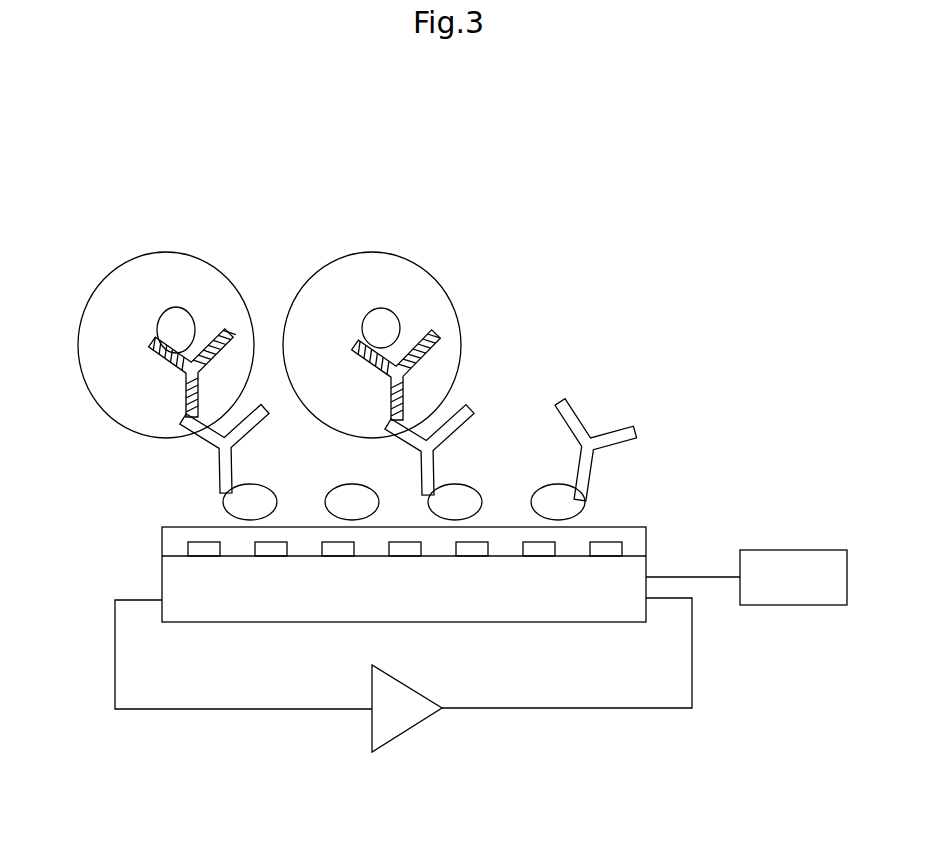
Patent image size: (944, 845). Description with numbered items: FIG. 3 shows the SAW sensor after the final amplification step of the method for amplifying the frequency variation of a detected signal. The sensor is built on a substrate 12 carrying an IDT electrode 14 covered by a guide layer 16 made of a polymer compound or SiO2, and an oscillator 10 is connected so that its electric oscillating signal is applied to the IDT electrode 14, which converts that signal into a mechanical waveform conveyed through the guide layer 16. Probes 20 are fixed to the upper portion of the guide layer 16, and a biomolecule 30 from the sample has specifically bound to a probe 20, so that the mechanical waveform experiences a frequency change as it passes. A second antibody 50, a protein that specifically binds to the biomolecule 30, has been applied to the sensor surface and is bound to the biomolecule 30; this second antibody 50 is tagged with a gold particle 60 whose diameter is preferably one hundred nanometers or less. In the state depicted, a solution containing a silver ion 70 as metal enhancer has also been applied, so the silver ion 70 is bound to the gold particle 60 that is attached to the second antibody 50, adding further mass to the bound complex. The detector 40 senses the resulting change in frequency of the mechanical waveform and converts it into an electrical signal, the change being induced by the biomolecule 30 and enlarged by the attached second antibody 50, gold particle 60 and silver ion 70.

The oscillator 10 is at (407, 730).
The substrate 12 is at (270, 622).
The IDT electrode 14 is at (203, 552).
The guide layer 16 is at (172, 543).
The probe 20 is at (233, 507).
The biomolecule 30 is at (213, 443).
The detector 40 is at (793, 550).
The second antibody 50 is at (441, 366).
The gold particle 60 is at (385, 322).
The silver ion 70 is at (200, 263).